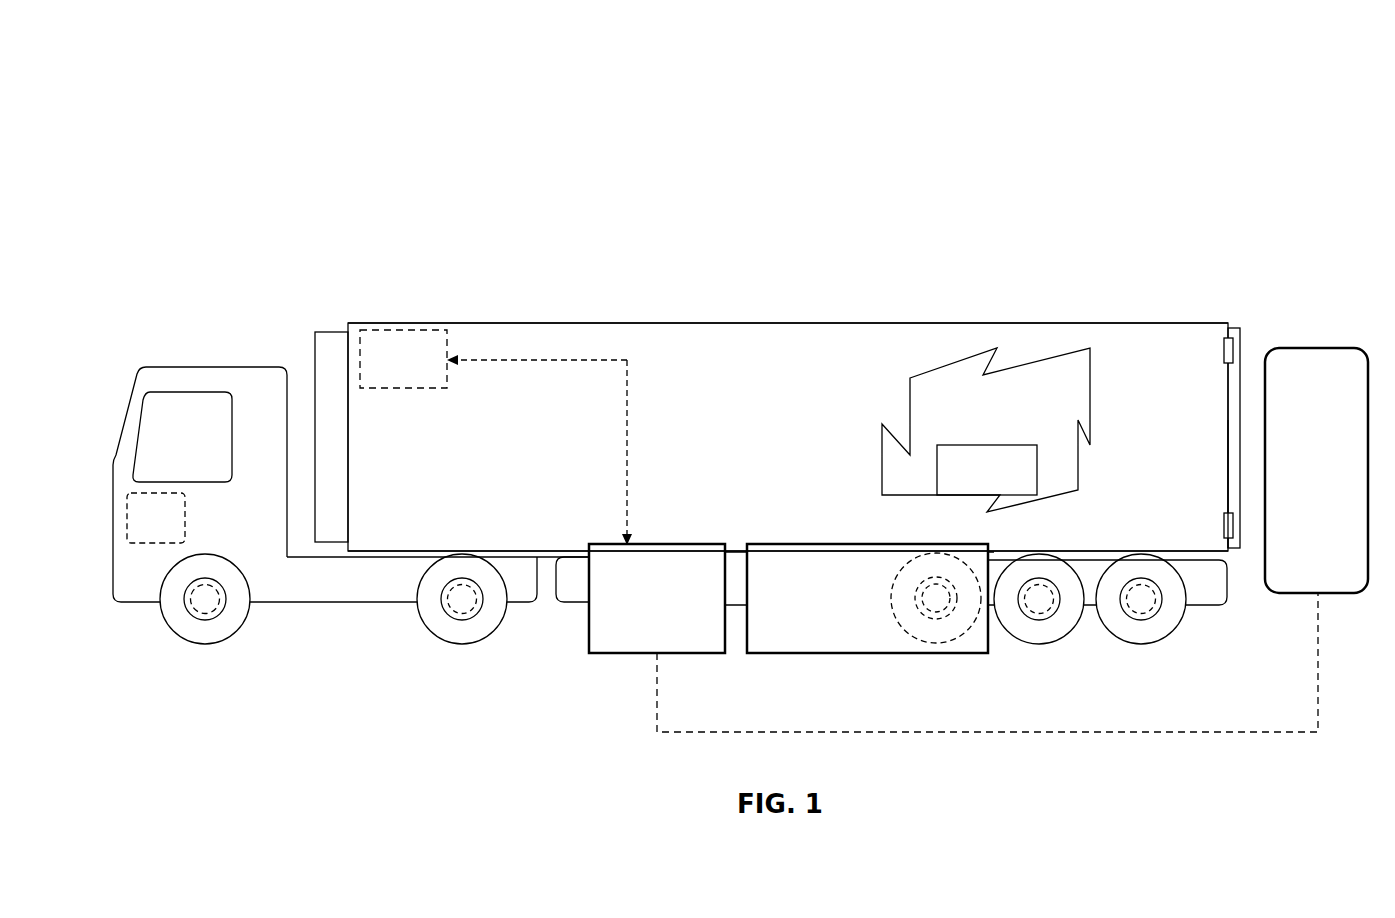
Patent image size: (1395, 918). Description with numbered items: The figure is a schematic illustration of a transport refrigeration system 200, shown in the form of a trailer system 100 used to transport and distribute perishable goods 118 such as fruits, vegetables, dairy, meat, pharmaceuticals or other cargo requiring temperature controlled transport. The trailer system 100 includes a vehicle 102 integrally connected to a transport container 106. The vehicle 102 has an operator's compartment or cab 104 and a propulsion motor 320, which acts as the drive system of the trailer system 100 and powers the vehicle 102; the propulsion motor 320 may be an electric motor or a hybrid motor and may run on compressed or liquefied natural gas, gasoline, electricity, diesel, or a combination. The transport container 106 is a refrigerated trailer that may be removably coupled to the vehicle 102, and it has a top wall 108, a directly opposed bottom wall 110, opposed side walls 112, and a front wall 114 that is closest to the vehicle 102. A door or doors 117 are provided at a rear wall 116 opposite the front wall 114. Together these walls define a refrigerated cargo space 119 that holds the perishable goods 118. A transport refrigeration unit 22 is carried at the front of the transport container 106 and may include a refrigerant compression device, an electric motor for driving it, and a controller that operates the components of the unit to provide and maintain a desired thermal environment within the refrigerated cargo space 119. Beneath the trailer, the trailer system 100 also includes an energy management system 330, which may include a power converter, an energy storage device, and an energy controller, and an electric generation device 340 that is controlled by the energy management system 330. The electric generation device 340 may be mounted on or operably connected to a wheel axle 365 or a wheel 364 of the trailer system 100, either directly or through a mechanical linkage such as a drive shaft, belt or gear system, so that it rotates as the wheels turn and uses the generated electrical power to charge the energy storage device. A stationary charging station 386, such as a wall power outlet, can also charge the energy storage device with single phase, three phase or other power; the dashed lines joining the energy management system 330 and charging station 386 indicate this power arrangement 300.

The transport refrigeration system 200 is at (166, 134).
The trailer system 100 is at (266, 238).
The vehicle 102 is at (138, 605).
The cab 104 is at (148, 432).
The propulsion motor 320 is at (127, 529).
The transport container 106 is at (895, 337).
The top wall 108 is at (737, 322).
The bottom wall 110 is at (1075, 551).
The front wall 114 is at (348, 480).
The transport refrigeration unit 22 is at (405, 330).
The refrigerated cargo space 119 is at (1083, 401).
The side walls 112 is at (829, 387).
The perishable goods 118 is at (995, 479).
The rear wall 116 is at (1228, 412).
The door 117 is at (1228, 452).
The power system 300 is at (1175, 771).
The energy management system 330 is at (607, 653).
The electric generation device 340 is at (787, 653).
The wheel 364 is at (945, 643).
The wheel axle 365 is at (935, 612).
The charging station 386 is at (1312, 348).